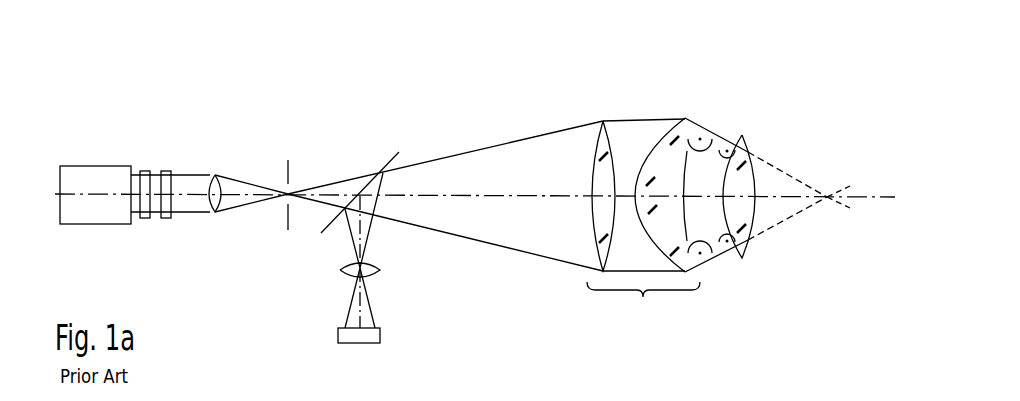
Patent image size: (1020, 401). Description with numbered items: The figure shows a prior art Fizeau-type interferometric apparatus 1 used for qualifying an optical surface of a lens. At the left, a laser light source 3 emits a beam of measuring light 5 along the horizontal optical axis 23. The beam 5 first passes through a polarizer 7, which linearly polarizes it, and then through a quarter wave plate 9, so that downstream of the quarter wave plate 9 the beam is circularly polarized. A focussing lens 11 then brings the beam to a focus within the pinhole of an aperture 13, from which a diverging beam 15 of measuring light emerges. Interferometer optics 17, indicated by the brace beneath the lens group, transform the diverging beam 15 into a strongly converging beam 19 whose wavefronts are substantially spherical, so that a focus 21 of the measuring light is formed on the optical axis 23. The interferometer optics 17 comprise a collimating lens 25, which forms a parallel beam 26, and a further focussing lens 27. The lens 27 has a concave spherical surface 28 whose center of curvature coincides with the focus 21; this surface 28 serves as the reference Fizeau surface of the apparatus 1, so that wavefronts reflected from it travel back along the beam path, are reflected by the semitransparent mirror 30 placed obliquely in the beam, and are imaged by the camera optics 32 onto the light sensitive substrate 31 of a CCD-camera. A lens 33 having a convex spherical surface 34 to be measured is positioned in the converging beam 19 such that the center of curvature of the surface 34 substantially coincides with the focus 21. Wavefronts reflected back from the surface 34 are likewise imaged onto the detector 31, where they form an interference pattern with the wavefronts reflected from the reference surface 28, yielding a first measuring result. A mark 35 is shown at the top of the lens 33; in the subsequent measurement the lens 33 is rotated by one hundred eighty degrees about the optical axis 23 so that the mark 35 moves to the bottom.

The interferometric apparatus 1 is at (356, 102).
The laser light source 3 is at (95, 166).
The beam of measuring light 5 is at (190, 175).
The polarizer 7 is at (145, 220).
The quarter wave plate 9 is at (166, 220).
The focussing lens 11 is at (215, 175).
The aperture 13 is at (302, 170).
The diverging beam 15 is at (485, 147).
The interferometer optics 17 is at (643, 305).
The converging beam 19 is at (713, 257).
The focus 21 is at (829, 200).
The optical axis 23 is at (868, 196).
The collimating lens 25 is at (603, 120).
The parallel beam 26 is at (640, 121).
The further focussing lens 27 is at (693, 118).
The concave spherical surface 28 is at (706, 134).
The semitransparent mirror 30 is at (402, 156).
The light sensitive substrate 31 is at (382, 337).
The camera optics 32 is at (380, 272).
The lens 33 is at (748, 247).
The convex spherical surface 34 is at (733, 253).
The mark 35 is at (747, 118).